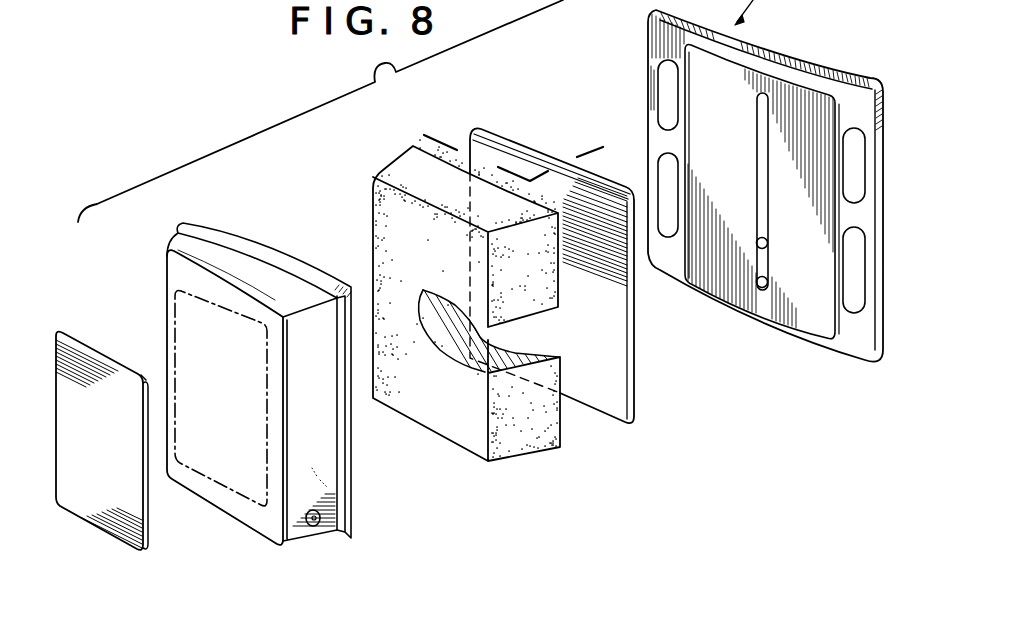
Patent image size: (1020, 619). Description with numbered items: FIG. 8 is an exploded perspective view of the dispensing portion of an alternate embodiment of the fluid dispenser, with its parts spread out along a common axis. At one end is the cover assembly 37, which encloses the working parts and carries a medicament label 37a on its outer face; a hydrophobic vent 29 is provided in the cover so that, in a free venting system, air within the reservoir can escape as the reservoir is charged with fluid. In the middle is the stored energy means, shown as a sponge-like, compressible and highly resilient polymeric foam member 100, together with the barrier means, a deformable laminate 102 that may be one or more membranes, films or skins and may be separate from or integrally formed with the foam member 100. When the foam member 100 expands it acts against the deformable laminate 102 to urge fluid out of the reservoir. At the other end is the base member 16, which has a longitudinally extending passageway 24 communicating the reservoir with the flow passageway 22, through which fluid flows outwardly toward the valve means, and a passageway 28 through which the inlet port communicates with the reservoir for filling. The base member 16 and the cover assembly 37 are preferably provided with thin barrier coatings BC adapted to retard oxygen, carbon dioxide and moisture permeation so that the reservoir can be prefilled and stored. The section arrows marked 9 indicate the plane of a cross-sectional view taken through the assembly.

The section line 9- 9 is at (593, 142).
The base member 16 is at (875, 75).
The flow passageway 22 is at (768, 245).
The longitudinally extending passageway 24 is at (763, 170).
The passageway 28 is at (761, 289).
The vent 29 is at (312, 528).
The cover assembly 37 is at (161, 262).
The medicament label 37a is at (72, 355).
The polymeric foam member 100 is at (372, 180).
The deformable laminate 102 is at (600, 412).
The barrier coatings BC is at (242, 511).